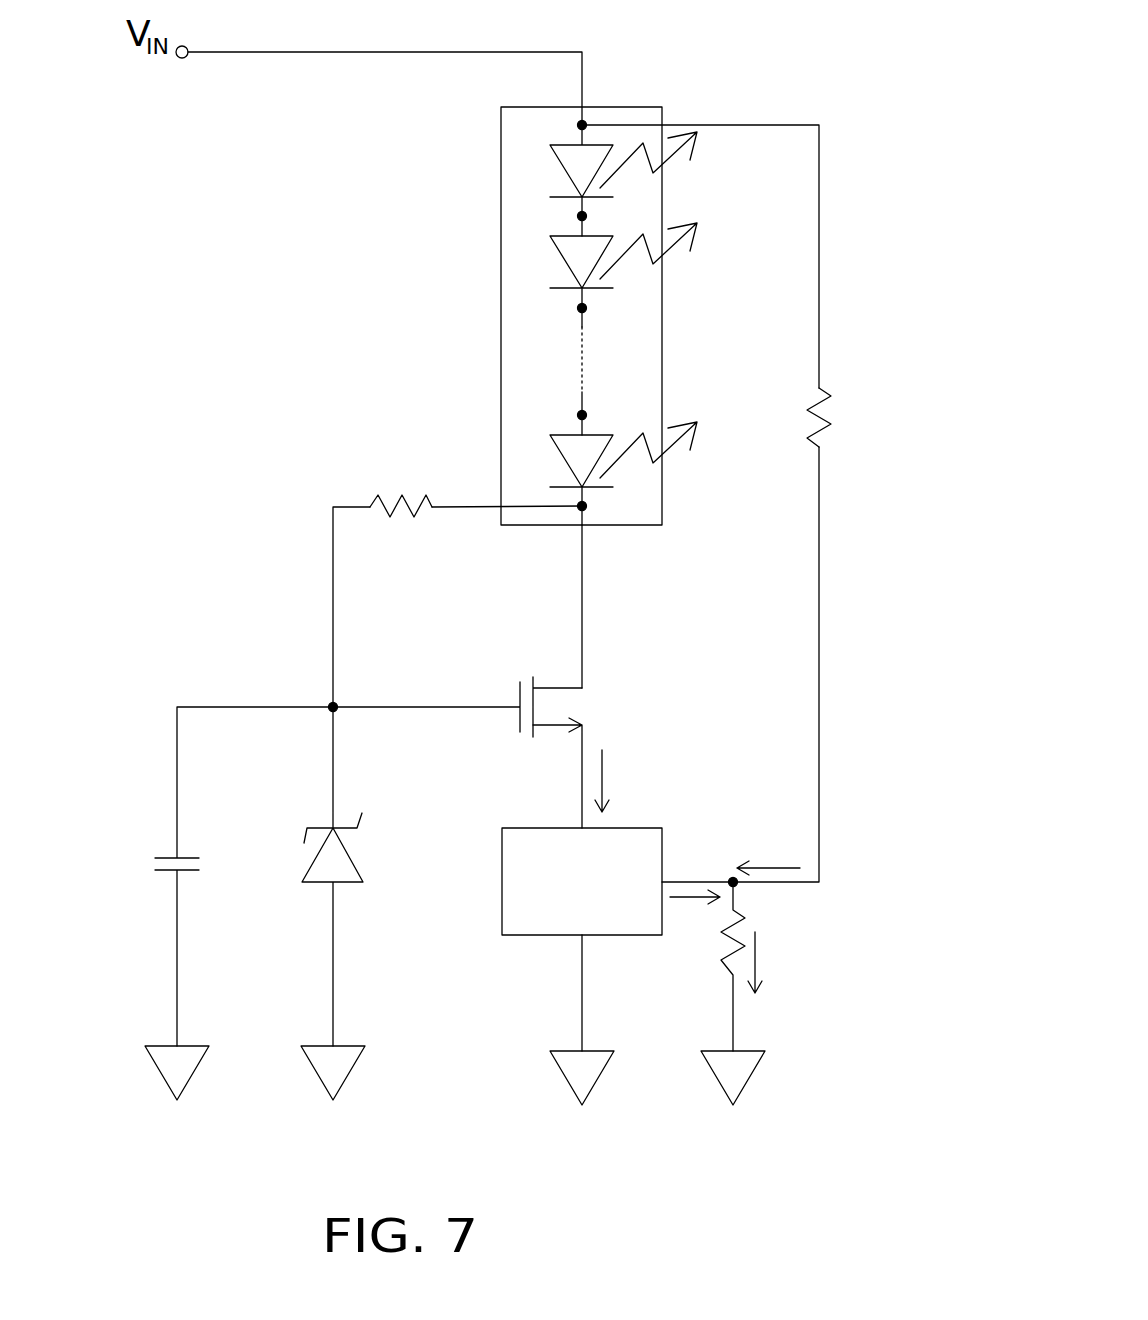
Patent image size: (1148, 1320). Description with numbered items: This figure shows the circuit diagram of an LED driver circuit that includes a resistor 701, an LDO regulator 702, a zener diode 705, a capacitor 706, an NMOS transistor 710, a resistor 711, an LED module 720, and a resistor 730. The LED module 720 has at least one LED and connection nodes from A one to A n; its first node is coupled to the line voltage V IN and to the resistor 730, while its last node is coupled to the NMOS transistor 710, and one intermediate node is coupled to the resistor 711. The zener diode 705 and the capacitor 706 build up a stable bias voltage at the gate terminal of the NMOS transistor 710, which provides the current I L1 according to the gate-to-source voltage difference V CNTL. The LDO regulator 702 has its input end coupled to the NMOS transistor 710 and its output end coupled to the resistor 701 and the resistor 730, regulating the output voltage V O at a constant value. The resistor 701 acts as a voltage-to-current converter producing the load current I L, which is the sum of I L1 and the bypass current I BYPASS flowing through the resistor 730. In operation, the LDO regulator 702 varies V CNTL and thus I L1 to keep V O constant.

The resistor 701 is at (743, 928).
The LDO regulator 702 is at (540, 935).
The zener diode 705 is at (353, 850).
The capacitor 706 is at (155, 862).
The NMOS transistor 710 is at (578, 703).
The resistor 711 is at (417, 500).
The LED module 720 is at (662, 323).
The resistor 730 is at (825, 428).